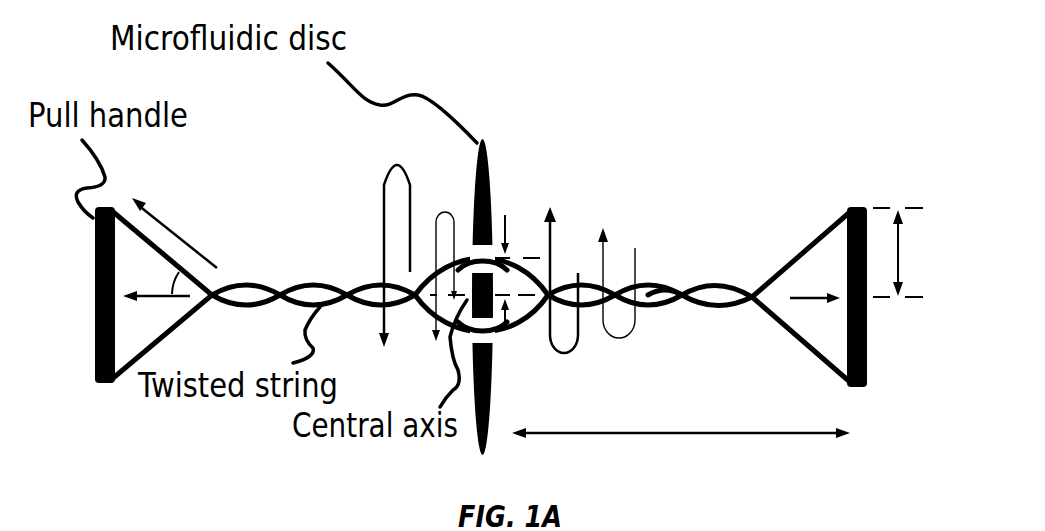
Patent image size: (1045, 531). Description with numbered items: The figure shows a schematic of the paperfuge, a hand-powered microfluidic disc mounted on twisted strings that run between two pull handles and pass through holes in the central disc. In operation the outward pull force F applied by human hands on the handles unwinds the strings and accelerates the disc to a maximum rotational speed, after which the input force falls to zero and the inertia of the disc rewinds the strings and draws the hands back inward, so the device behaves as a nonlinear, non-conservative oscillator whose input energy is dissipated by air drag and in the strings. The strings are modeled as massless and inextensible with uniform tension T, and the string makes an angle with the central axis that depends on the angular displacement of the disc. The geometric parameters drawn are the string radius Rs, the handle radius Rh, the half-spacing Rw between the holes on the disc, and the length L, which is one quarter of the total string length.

The string tension T is at (174, 231).
The applied pull force F is at (481, 303).
The disc hole half-spacing Rw is at (485, 294).
The string radius Rs is at (680, 300).
The handle radius Rh is at (911, 252).
The string length parameter L is at (681, 416).